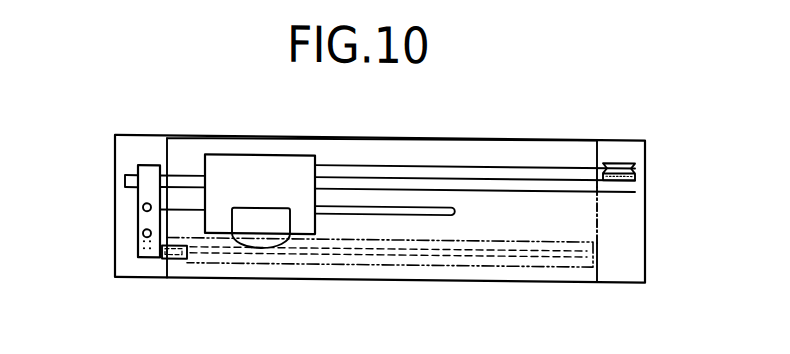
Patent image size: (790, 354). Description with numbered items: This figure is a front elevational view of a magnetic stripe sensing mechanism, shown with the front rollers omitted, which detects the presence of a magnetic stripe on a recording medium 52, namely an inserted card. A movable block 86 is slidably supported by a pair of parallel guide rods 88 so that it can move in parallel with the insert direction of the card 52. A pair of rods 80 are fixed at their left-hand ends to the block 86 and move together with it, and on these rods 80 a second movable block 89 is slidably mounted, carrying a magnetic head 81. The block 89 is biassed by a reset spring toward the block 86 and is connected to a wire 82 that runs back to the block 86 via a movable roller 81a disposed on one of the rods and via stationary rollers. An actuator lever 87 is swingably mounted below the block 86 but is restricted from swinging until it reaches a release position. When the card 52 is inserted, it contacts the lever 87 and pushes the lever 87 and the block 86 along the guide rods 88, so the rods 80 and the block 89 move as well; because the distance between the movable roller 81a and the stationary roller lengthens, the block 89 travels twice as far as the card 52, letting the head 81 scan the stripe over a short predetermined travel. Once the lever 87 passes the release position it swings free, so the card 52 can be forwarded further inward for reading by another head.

The recording medium 52 is at (473, 254).
The rods 80 is at (418, 205).
The magnetic head 81 is at (262, 242).
The movable roller 81a is at (633, 158).
The wire 82 is at (561, 161).
The movable block 86 is at (150, 168).
The actuator lever 87 is at (178, 259).
The guide rods 88 is at (142, 233).
The movable block 89 is at (288, 166).